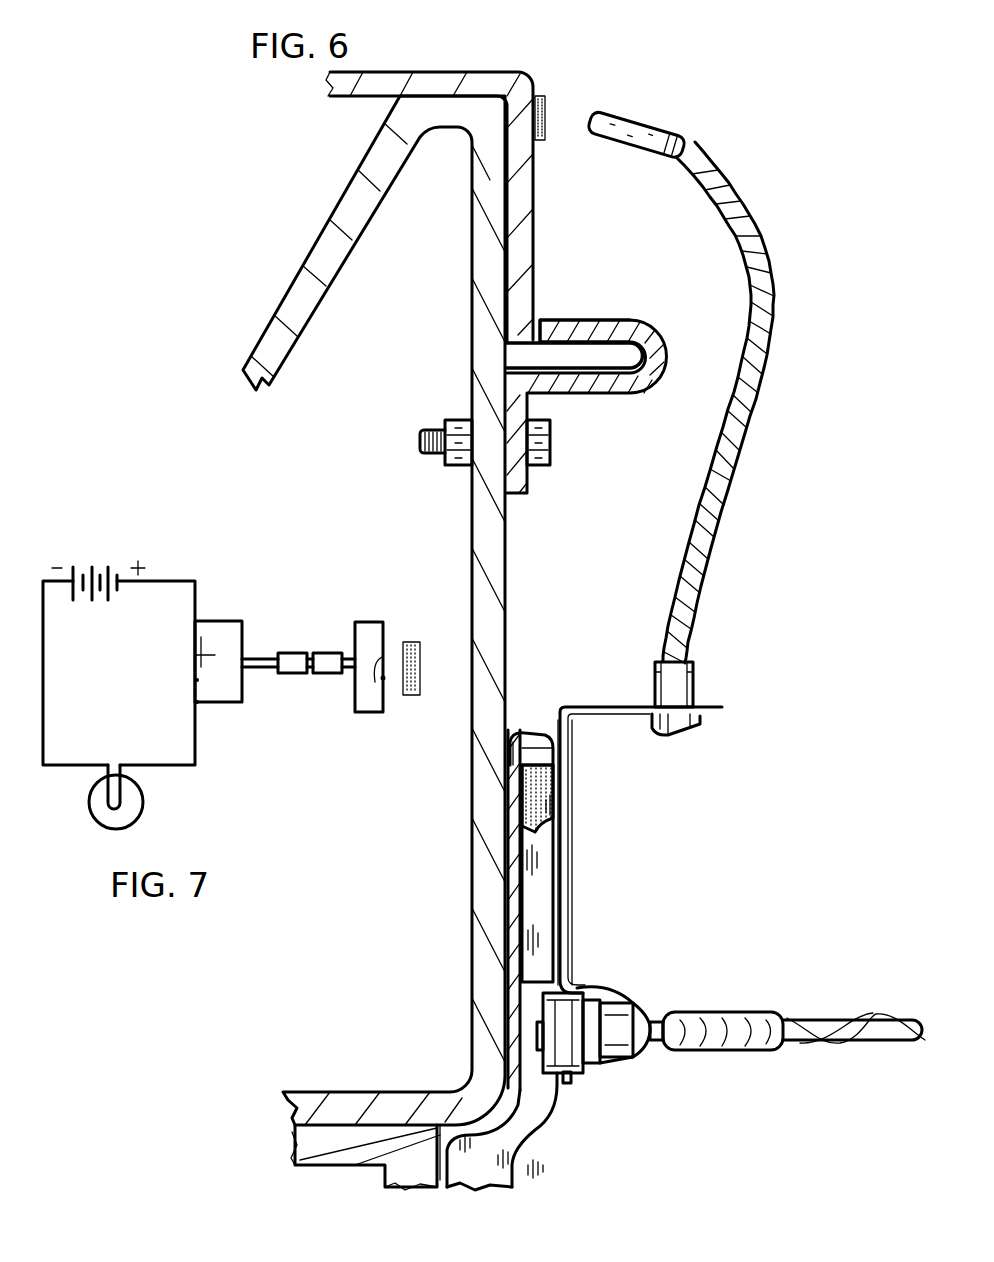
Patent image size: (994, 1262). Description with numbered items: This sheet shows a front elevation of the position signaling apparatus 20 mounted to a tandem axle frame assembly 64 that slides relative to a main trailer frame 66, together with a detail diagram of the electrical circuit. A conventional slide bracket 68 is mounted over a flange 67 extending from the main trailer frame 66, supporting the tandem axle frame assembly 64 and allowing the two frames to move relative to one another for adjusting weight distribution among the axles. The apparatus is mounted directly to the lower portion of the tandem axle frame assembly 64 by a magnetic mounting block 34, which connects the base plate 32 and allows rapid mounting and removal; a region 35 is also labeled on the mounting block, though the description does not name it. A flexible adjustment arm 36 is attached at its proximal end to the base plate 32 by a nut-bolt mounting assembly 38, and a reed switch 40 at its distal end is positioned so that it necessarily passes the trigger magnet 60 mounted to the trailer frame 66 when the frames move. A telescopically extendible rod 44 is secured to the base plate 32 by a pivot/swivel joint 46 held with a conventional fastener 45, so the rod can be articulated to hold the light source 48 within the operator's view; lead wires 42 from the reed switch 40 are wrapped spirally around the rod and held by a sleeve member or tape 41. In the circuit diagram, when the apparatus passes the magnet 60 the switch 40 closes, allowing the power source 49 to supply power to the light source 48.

In FIG. 6, the position signaling apparatus 20 is at (669, 800).
In FIG. 7, the position signaling apparatus 20 is at (228, 614).
In FIG. 6, the base plate 32 is at (700, 706).
In FIG. 6, the magnetic mounting block 34 is at (548, 852).
In FIG. 6, the anode coating 35 is at (540, 790).
In FIG. 6, the flexible adjustment arm 36 is at (768, 264).
In FIG. 6, the nut-bolt mounting assembly 38 is at (717, 727).
In FIG. 6, the reed switch 40 is at (632, 128).
In FIG. 7, the reed switch 40 is at (383, 652).
In FIG. 6, the sleeve member or tape 41 is at (690, 1012).
In FIG. 6, the lead wires 42 is at (607, 716).
In FIG. 6, the telescopically extendible rod 44 is at (838, 1021).
In FIG. 6, the fastener 45 is at (542, 1036).
In FIG. 6, the pivot/swivel joint 46 is at (557, 1056).
In FIG. 7, the light source 48 is at (145, 816).
In FIG. 7, the power source 49 is at (102, 564).
In FIG. 6, the trigger magnet 60 is at (546, 103).
In FIG. 7, the trigger magnet 60 is at (412, 642).
In FIG. 6, the tandem axle frame assembly 64 is at (509, 545).
In FIG. 6, the main trailer frame 66 is at (528, 70).
In FIG. 6, the flange 67 is at (658, 342).
In FIG. 6, the slide bracket 68 is at (592, 322).